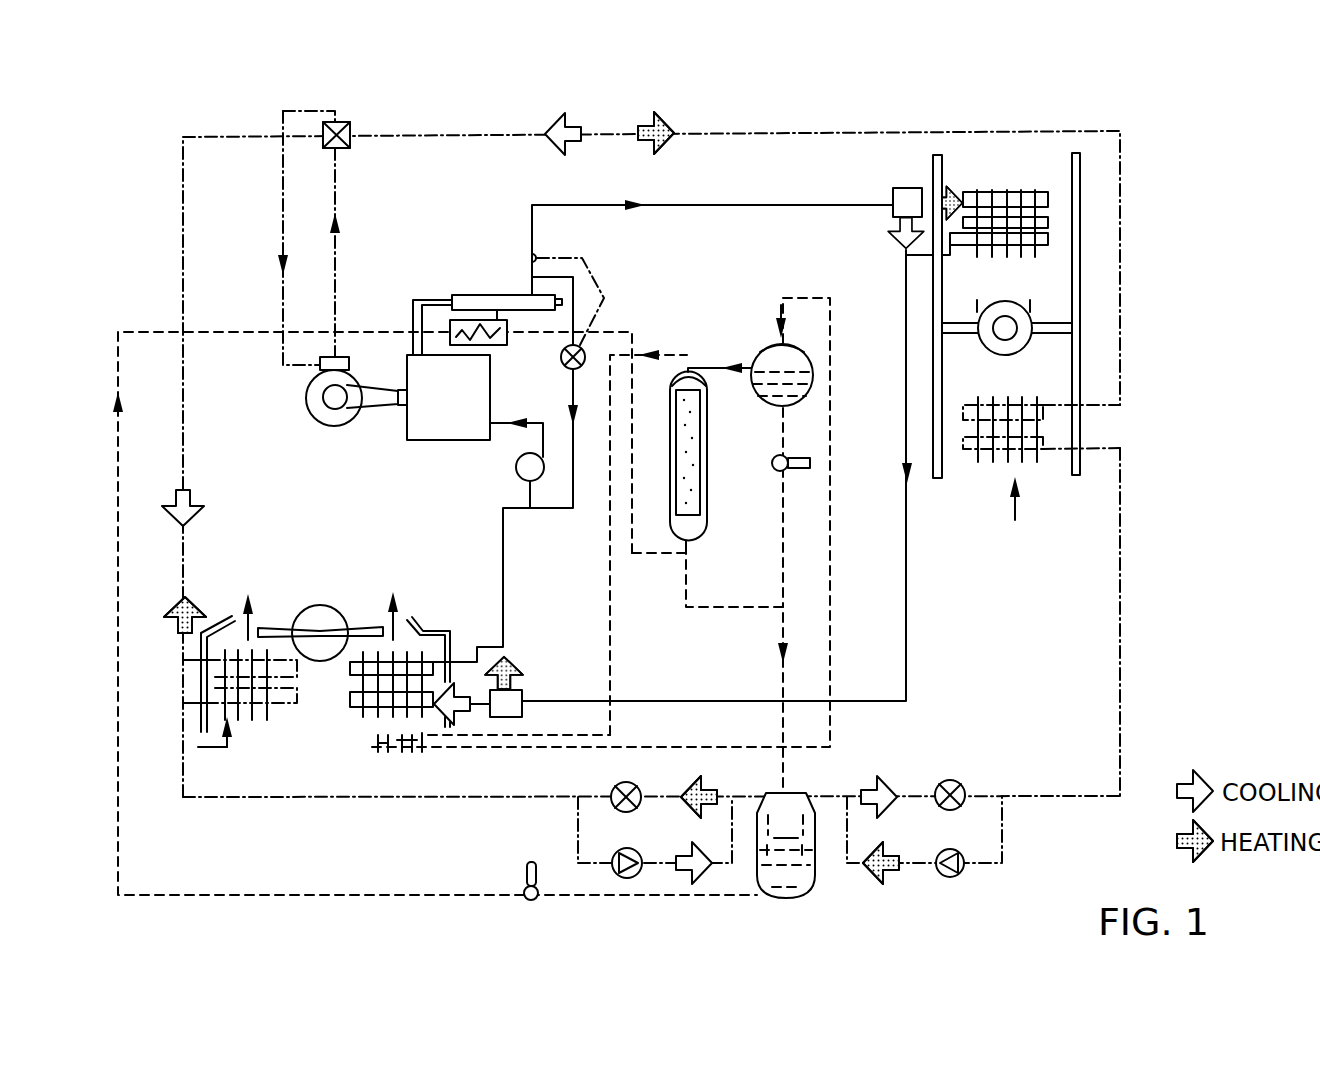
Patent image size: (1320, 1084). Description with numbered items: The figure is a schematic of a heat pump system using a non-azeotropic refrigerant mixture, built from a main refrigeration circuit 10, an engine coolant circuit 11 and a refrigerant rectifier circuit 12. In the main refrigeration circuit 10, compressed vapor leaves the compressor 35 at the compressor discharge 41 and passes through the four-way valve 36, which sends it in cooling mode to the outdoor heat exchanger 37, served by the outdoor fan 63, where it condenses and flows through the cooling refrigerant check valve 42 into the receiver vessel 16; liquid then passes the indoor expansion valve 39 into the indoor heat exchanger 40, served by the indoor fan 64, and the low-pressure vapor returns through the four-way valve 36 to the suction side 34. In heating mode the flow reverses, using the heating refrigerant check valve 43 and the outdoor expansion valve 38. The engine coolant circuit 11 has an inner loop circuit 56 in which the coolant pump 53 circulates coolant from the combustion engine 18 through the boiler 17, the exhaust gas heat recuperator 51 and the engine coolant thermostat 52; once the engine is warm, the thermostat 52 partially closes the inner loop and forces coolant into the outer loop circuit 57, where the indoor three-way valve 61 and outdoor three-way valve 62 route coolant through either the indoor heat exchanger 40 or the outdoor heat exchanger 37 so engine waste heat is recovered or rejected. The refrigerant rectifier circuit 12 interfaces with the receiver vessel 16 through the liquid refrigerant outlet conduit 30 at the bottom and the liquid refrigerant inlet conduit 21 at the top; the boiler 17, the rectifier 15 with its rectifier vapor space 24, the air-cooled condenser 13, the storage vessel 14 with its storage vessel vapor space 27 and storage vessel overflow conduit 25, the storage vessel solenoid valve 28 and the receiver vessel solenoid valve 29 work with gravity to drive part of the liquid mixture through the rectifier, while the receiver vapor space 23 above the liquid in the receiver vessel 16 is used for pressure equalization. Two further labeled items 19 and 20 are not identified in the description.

The main refrigeration circuit 10 is at (1128, 262).
The engine coolant circuit 11 is at (712, 218).
The refrigerant rectifier circuit 12 is at (604, 580).
The condenser 13 is at (403, 752).
The storage vessel 14 is at (770, 343).
The rectifier 15 is at (708, 465).
The receiver vessel 16 is at (803, 893).
The boiler 17 is at (498, 345).
The combustion engine 18 is at (422, 442).
The crankcase heater element 19 is at (474, 345).
The water circuit 20 is at (735, 797).
The liquid refrigerant inlet conduit 21 is at (780, 692).
The receiver vapor space 23 is at (786, 850).
The rectifier vapor space 24 is at (702, 378).
The storage vessel overflow conduit 25 is at (700, 372).
The storage vessel vapor space 27 is at (768, 355).
The storage vessel solenoid valve 28 is at (786, 472).
The receiver vessel solenoid valve 29 is at (525, 900).
The liquid refrigerant outlet conduit 30 is at (645, 896).
The suction side 34 is at (320, 366).
The compressor 35 is at (312, 412).
The four-way valve 36 is at (352, 122).
The outdoor heat exchanger 37 is at (412, 620).
The outdoor expansion valve 38 is at (620, 783).
The indoor expansion valve 39 is at (945, 780).
The indoor heat exchanger 40 is at (1080, 310).
The compressor discharge 41 is at (330, 357).
The cooling refrigerant check valve 42 is at (626, 878).
The heating refrigerant check valve 43 is at (962, 870).
The exhaust gas heat recuperator 51 is at (478, 295).
The engine coolant thermostat 52 is at (563, 367).
The coolant pump 53 is at (518, 470).
The inner loop circuit 56 is at (578, 482).
The outer loop circuit 57 is at (915, 542).
The indoor three-way valve 61 is at (893, 192).
The outdoor three-way valve 62 is at (522, 692).
The outdoor fan 63 is at (308, 608).
The indoor fan 64 is at (1018, 352).